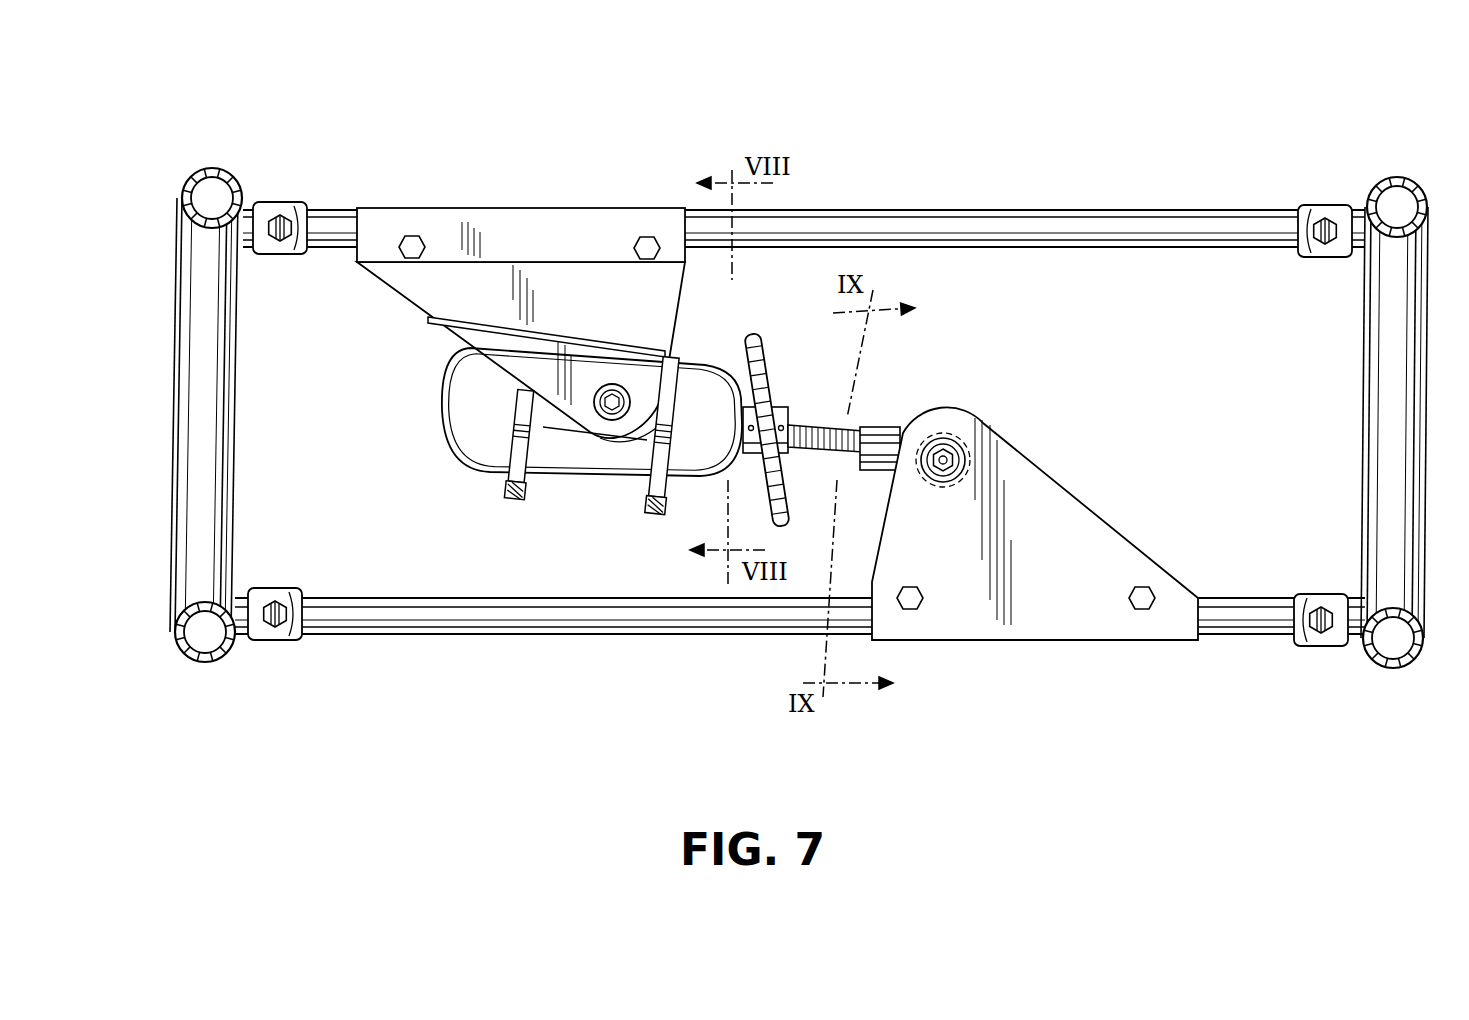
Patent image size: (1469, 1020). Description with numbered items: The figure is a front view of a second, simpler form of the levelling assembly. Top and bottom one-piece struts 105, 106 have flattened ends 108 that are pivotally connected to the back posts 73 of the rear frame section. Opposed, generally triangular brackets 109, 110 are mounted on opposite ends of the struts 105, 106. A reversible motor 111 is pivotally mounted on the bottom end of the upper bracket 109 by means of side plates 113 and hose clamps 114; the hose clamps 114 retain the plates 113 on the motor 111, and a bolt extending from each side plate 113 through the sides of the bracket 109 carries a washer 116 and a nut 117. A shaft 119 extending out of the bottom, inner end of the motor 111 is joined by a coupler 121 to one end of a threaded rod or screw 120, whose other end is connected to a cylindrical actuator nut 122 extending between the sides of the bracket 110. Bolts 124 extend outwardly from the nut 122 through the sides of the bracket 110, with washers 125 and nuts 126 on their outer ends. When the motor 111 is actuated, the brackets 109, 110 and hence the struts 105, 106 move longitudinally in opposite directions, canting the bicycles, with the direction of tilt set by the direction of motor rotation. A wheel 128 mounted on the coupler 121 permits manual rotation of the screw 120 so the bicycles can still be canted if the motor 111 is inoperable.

The back posts 73 is at (237, 395).
The top one-piece strut 105 is at (1005, 222).
The bottom one-piece strut 106 is at (557, 625).
The flattened ends 108 is at (267, 207).
The upper bracket 109 is at (507, 217).
The bracket 110 is at (1063, 625).
The reversible motor 111 is at (460, 433).
The side plates 113 is at (603, 488).
The hose clamps 114 is at (518, 500).
The washer 116 is at (612, 395).
The nut 117 is at (625, 425).
The shaft 119 is at (765, 365).
The threaded rod or screw 120 is at (867, 420).
The coupler 121 is at (800, 428).
The cylindrical actuator nut 122 is at (950, 445).
The bolts 124 is at (950, 447).
The washers 125 is at (943, 485).
The nuts 126 is at (960, 468).
The wheel 128 is at (783, 335).